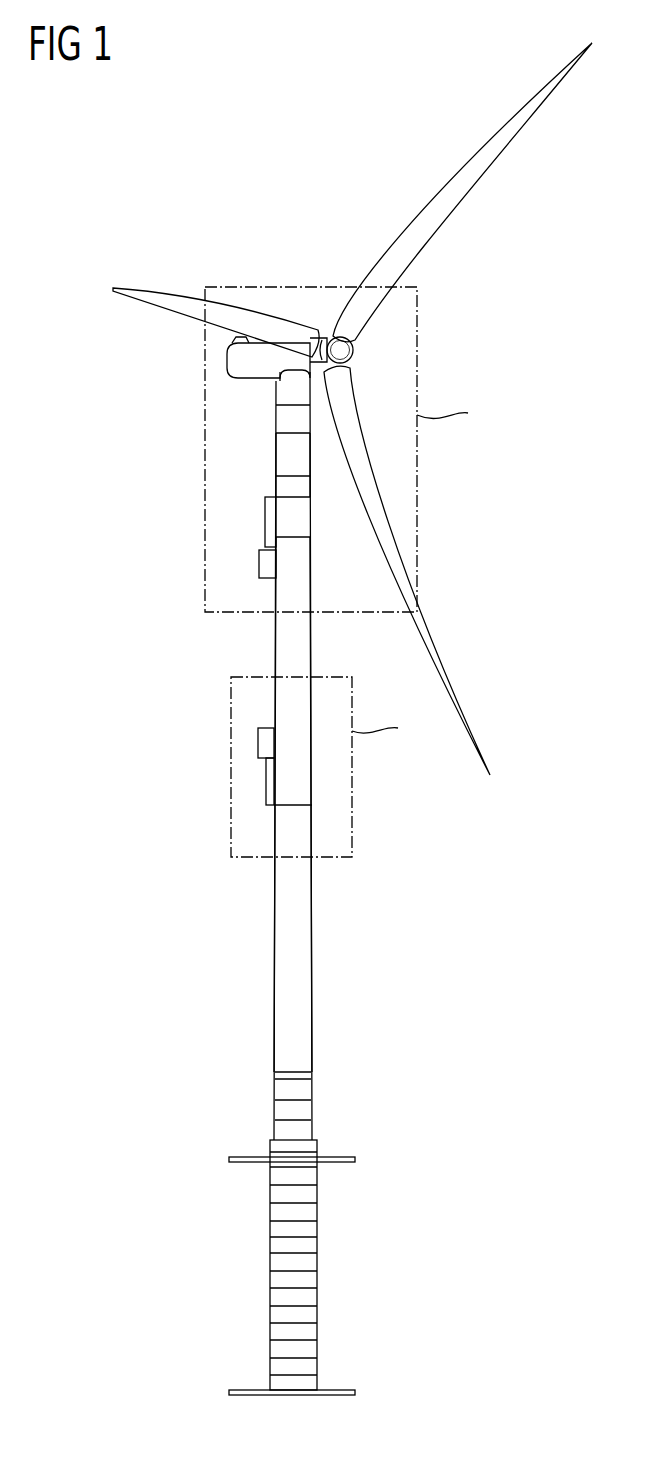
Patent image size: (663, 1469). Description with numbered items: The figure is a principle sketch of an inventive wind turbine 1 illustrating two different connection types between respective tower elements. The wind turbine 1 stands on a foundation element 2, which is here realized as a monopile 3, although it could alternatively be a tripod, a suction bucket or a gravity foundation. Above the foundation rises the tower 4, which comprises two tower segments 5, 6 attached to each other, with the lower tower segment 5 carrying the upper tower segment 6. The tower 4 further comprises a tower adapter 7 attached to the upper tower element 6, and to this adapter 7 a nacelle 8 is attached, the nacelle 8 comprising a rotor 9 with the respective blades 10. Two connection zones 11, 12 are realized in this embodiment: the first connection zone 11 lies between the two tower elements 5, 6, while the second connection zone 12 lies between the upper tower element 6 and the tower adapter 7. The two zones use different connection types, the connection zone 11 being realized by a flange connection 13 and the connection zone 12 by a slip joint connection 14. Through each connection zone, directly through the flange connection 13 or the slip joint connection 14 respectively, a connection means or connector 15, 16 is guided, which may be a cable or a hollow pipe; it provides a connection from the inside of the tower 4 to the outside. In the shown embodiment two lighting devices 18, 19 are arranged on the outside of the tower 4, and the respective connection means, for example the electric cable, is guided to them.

The wind turbine 1 is at (240, 150).
The foundation element 2 is at (328, 1260).
The monopile 3 is at (283, 1262).
The tower 4 is at (322, 912).
The tower segment 5 is at (287, 952).
The tower segment 6 is at (285, 638).
The tower adapter 7 is at (290, 447).
The nacelle 8 is at (240, 362).
The rotor 9 is at (343, 350).
The blades 10 is at (482, 163).
The first connection zone 11 is at (322, 806).
The second connection zone 12 is at (322, 487).
The flange connection 13 is at (270, 810).
The slip joint connection 14 is at (255, 478).
The connection means 15 is at (258, 778).
The connection means 16 is at (257, 520).
The lighting device 18 is at (262, 742).
The lighting device 19 is at (268, 566).